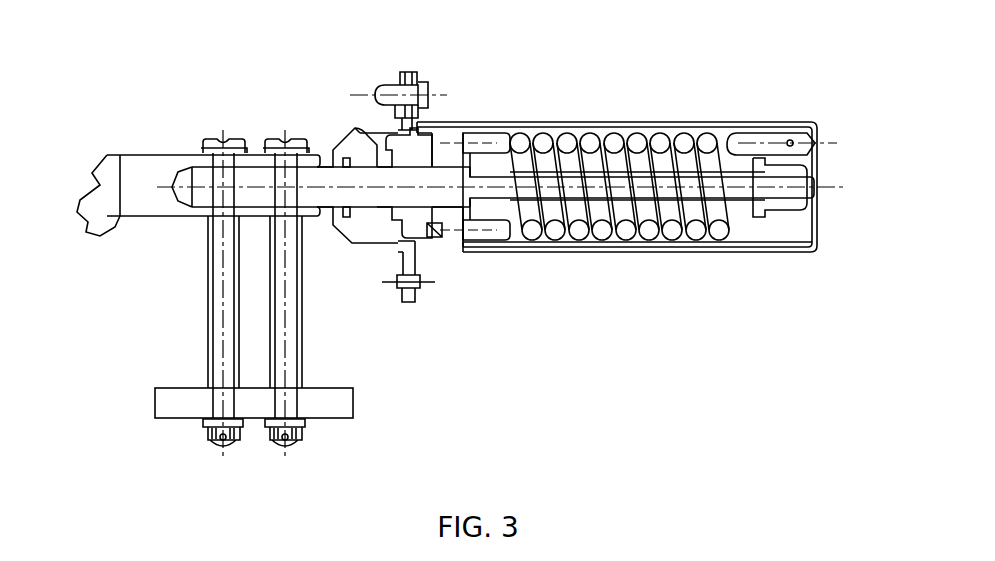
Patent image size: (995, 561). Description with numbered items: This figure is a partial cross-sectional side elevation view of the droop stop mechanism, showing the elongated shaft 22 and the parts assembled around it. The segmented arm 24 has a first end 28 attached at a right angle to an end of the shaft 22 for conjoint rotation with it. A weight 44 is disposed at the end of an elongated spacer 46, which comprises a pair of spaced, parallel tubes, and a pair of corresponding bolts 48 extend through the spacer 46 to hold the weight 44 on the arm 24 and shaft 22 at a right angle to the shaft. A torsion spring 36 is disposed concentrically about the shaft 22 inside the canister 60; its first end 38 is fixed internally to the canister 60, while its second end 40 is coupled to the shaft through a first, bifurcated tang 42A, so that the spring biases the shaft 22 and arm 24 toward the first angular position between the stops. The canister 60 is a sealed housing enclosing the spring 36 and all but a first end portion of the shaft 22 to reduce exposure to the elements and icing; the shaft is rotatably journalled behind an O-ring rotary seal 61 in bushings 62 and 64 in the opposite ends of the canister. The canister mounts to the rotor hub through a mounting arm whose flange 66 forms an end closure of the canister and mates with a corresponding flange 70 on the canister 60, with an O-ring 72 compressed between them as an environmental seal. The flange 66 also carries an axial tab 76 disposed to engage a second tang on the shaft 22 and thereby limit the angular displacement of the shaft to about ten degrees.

The elongated shaft 22 is at (377, 207).
The segmented arm 24 is at (97, 188).
The first end of the arm 28 is at (300, 137).
The torsion spring 36 is at (612, 142).
The first end of the torsion spring 38 is at (783, 137).
The second end of the torsion spring 40 is at (495, 133).
The first bifurcated tang 42A is at (455, 162).
The weight 44 is at (342, 405).
The elongated spacer 46 is at (300, 360).
The bolts 48 is at (222, 352).
The canister 60 is at (703, 250).
The O-ring rotary seal 61 is at (337, 214).
The bushing 62 is at (373, 160).
The bushing 64 is at (783, 212).
The flange of the mounting arm 66 is at (398, 77).
The flange of the canister 70 is at (423, 75).
The O-ring 72 is at (420, 118).
The axial tab 76 is at (437, 237).